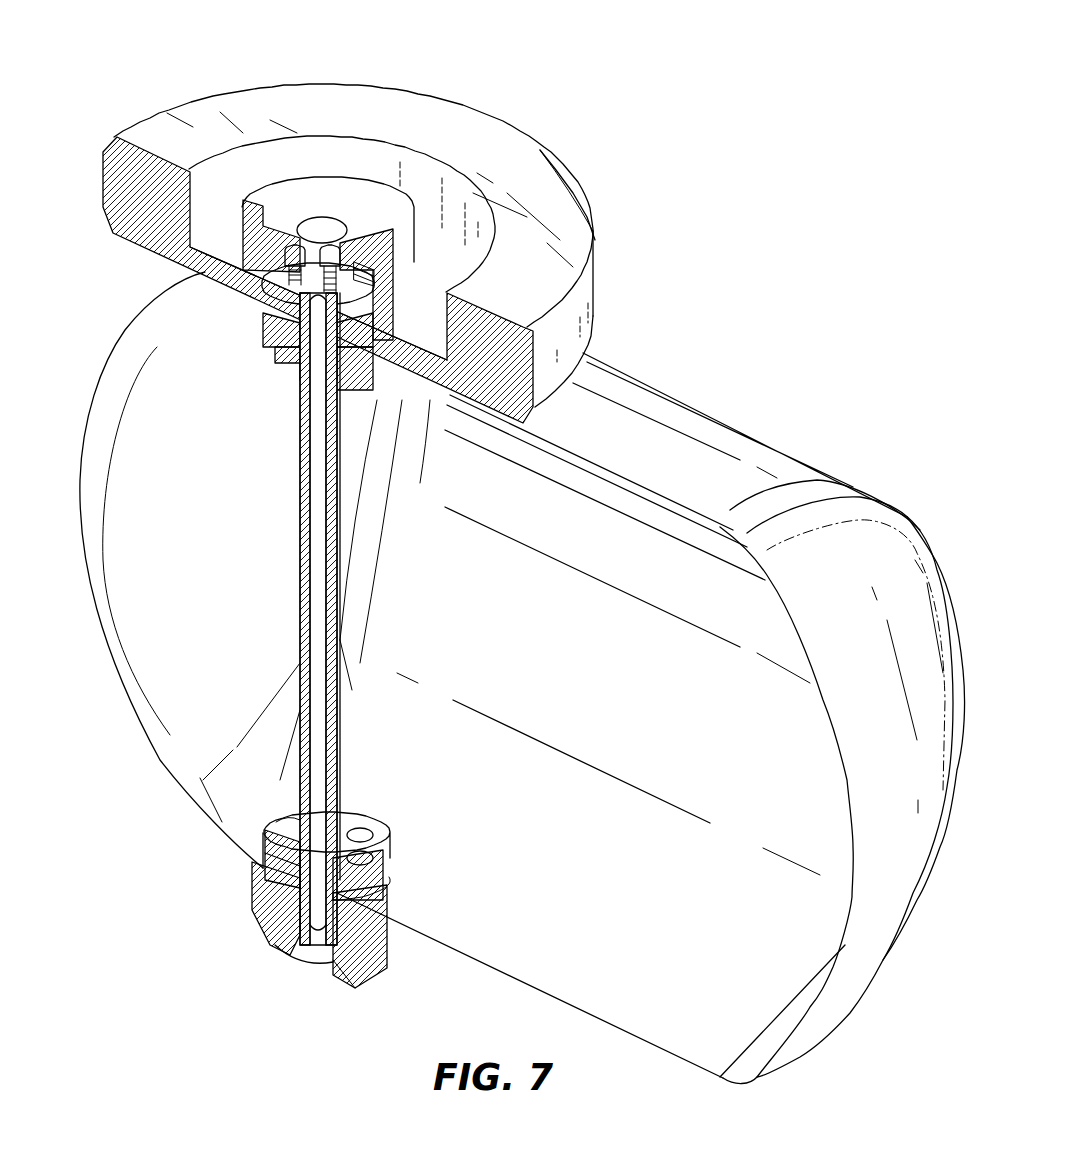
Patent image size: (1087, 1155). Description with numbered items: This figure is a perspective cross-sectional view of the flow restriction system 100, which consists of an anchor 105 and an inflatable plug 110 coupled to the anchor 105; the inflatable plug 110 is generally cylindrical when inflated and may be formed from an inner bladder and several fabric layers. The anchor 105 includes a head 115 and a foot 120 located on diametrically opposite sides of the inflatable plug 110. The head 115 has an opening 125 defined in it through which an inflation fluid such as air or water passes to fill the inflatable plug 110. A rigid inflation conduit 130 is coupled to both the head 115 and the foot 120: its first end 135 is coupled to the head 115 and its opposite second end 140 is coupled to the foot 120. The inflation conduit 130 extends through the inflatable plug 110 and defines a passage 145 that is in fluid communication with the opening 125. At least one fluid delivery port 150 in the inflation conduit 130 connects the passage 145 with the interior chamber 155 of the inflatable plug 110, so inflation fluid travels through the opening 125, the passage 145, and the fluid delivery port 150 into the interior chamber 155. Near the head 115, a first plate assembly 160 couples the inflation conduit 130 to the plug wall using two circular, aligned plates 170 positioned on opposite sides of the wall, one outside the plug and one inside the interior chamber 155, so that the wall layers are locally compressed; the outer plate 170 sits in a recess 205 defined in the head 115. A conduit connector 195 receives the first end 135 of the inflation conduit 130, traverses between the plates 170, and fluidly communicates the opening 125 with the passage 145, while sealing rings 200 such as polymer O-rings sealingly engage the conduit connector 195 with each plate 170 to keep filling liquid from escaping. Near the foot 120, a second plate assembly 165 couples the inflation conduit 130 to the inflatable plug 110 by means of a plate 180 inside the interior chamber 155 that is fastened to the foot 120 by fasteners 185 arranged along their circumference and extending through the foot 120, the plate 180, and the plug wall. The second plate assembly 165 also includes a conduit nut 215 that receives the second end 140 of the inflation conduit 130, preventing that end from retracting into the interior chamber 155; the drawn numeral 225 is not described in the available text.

The flow restriction system 100 is at (645, 120).
The anchor 105 is at (203, 80).
The inflatable plug 110 is at (880, 567).
The head 115 is at (487, 158).
The foot 120 is at (264, 888).
The opening 125 is at (323, 220).
The inflation conduit 130 is at (340, 507).
The first end 135 is at (292, 370).
The second end 140 is at (275, 943).
The passage 145 is at (302, 546).
The fluid delivery port 150 is at (263, 833).
The interior chamber 155 is at (620, 552).
The first plate assembly 160 is at (250, 321).
The second plate assembly 165 is at (404, 886).
The plates 170 is at (455, 317).
The plate 180 is at (393, 862).
The fasteners 185 is at (362, 818).
The conduit connector 195 is at (258, 345).
The sealing rings 200 is at (312, 378).
The recess 205 is at (266, 246).
The conduit nut 215 is at (357, 942).
The outlet 225 is at (318, 966).